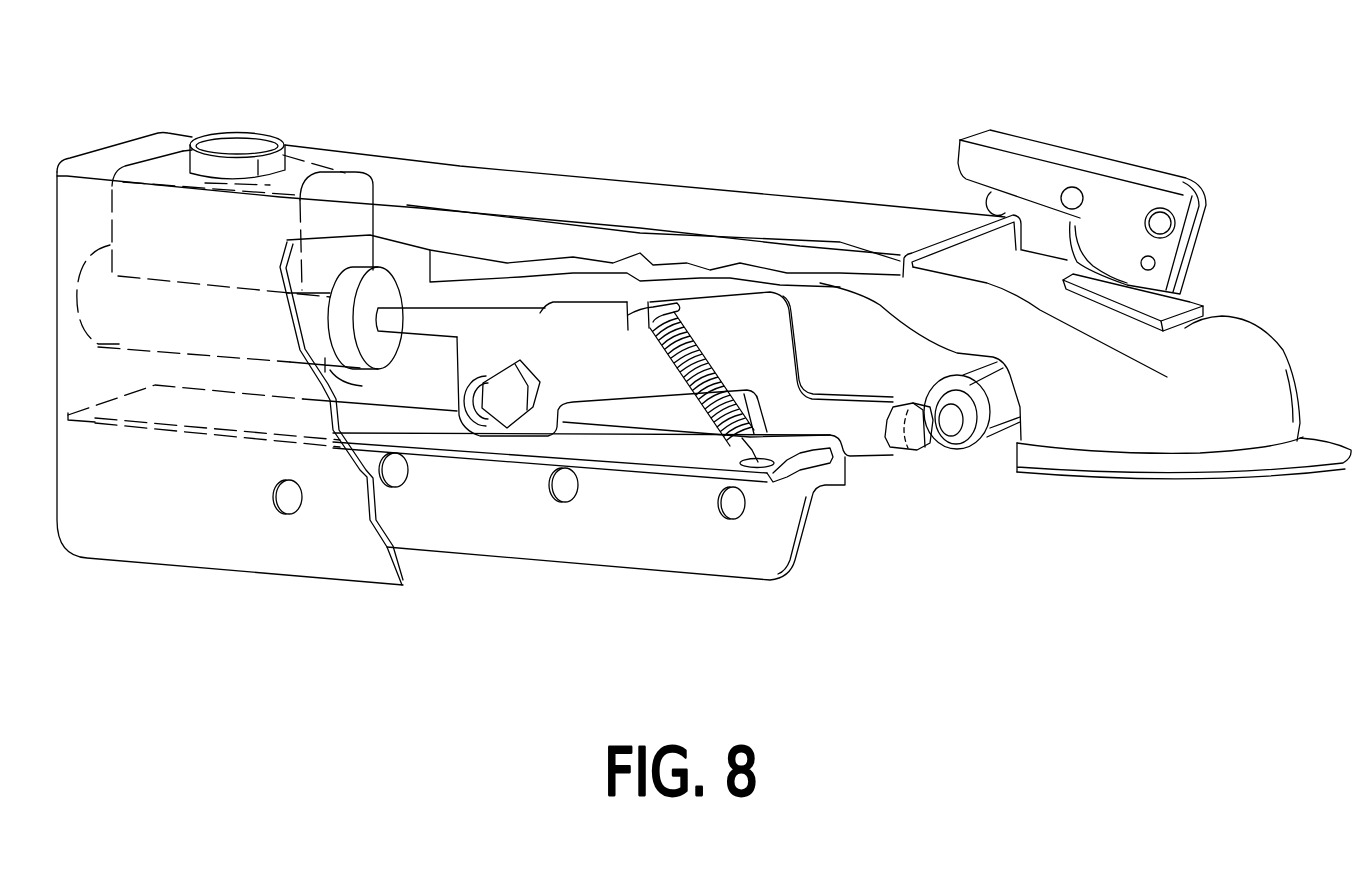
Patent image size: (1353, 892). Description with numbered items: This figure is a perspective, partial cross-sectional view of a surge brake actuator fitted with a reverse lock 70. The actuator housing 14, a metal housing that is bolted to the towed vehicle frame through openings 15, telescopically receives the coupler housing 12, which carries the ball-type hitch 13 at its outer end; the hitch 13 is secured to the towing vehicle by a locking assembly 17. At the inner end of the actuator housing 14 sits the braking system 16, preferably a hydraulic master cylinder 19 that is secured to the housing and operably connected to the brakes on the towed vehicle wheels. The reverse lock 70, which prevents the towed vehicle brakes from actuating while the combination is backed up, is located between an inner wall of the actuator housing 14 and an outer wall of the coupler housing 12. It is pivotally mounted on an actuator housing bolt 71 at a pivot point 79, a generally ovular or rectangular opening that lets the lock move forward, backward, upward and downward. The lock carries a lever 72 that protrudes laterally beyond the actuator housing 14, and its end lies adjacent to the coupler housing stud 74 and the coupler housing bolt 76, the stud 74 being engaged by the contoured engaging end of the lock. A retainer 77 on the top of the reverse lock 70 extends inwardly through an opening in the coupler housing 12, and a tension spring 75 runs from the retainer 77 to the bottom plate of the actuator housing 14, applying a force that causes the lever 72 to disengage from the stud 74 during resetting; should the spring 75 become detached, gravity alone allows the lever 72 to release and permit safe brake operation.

The coupler housing 12 is at (1143, 478).
The ball-type hitch 13 is at (1263, 347).
The actuator housing 14 is at (125, 530).
The openings 15 is at (278, 510).
The braking system 16 is at (357, 277).
The locking assembly 17 is at (1107, 163).
The hydraulic master cylinder 19 is at (362, 386).
The reverse lock 70 is at (592, 360).
The actuator housing bolt 71 is at (505, 403).
The lever 72 is at (873, 462).
The coupler housing stud 74 is at (943, 430).
The tension spring 75 is at (703, 410).
The coupler housing bolt 76 is at (900, 455).
The retainer 77 is at (645, 315).
The pivot point 79 is at (480, 397).